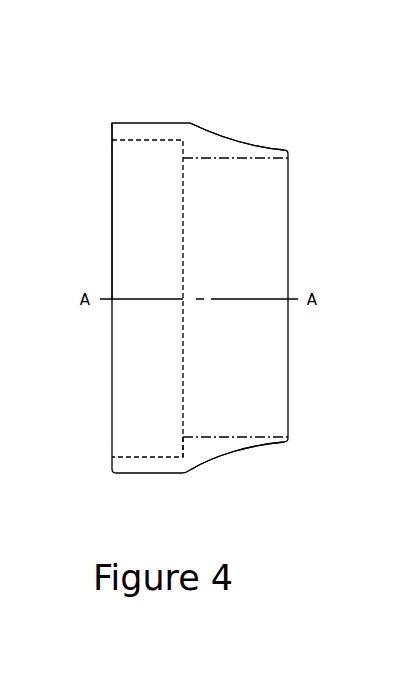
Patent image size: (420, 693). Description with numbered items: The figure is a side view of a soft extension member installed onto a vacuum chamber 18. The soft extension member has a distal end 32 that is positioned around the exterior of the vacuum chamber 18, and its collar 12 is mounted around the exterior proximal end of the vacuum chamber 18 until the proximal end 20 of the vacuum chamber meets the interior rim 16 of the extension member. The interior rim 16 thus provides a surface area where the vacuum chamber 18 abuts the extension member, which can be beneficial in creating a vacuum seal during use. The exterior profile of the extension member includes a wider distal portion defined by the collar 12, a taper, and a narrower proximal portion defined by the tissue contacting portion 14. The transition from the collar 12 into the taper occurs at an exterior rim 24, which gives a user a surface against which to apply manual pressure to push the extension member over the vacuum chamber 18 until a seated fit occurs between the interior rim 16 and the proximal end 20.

The collar 12 is at (133, 122).
The tissue contacting portion 14 is at (247, 450).
The interior rim 16 is at (183, 450).
The vacuum chamber 18 is at (150, 158).
The proximal end 20 is at (183, 172).
The exterior rim 24 is at (190, 123).
The distal end 32 is at (112, 123).